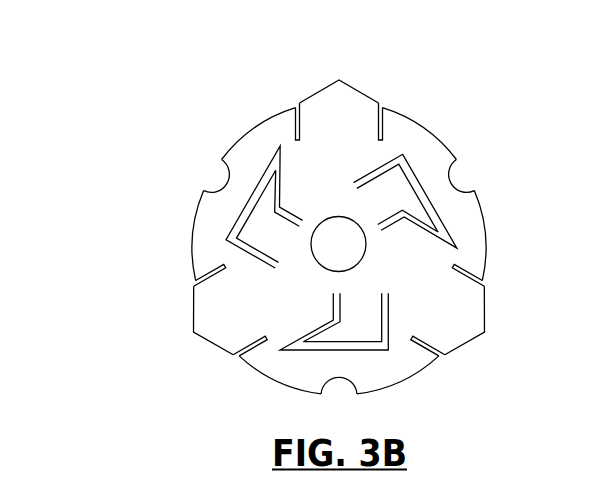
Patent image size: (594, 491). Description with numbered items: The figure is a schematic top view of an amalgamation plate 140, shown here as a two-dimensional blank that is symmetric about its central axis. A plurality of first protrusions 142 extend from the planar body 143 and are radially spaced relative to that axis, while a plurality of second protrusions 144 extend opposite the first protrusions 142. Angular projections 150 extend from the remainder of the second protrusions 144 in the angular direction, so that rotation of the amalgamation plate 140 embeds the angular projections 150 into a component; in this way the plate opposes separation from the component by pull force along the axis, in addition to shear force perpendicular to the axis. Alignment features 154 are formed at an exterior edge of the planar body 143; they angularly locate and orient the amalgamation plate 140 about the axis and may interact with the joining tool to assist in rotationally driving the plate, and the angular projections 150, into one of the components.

The amalgamation plate 140 is at (129, 90).
The first protrusions 142 is at (340, 103).
The planar body 143 is at (273, 138).
The second protrusions 144 is at (380, 203).
The angular projections 150 is at (260, 187).
The alignment features 154 is at (228, 175).